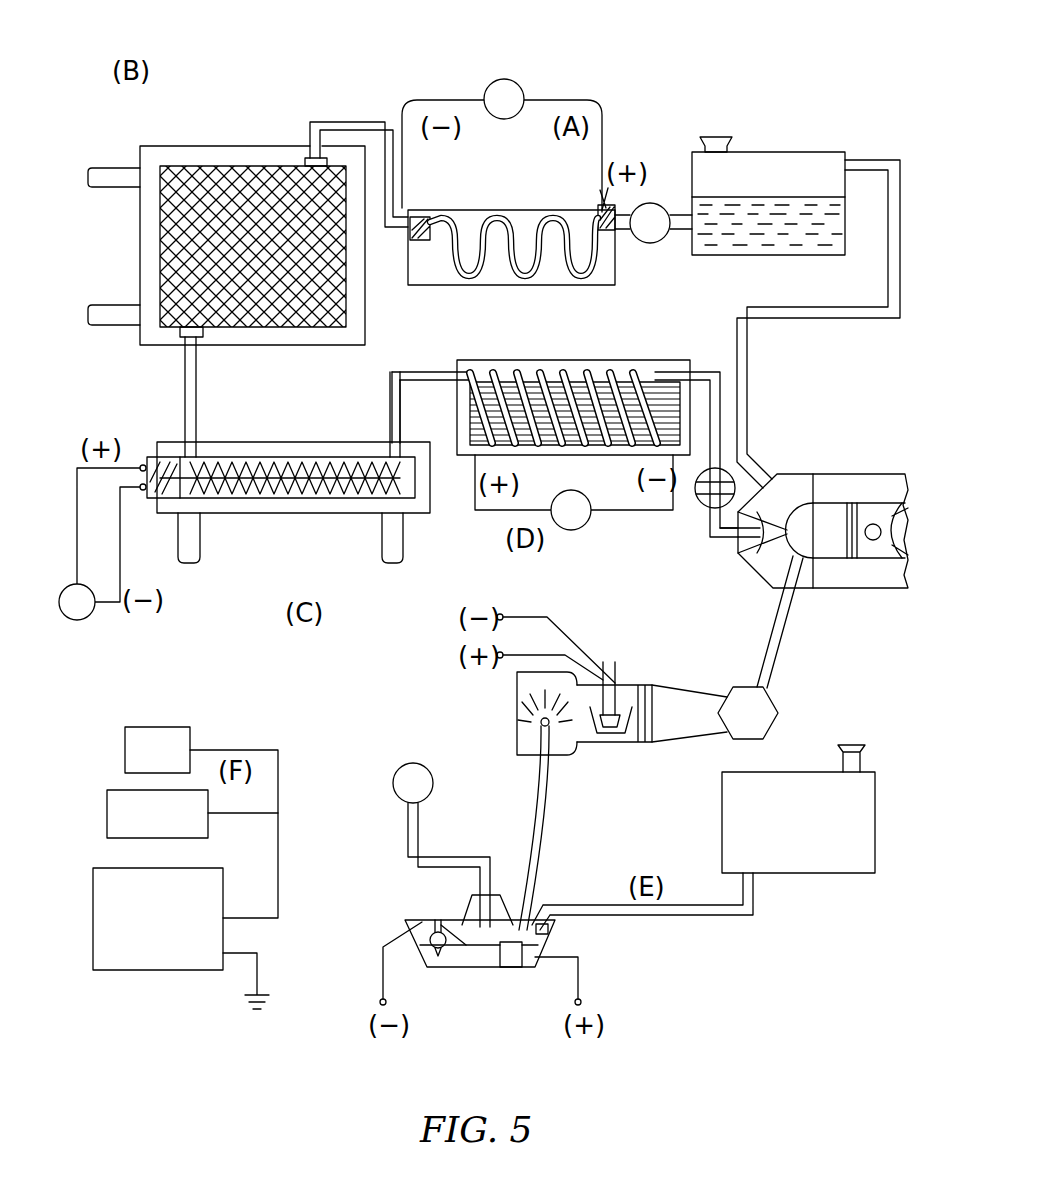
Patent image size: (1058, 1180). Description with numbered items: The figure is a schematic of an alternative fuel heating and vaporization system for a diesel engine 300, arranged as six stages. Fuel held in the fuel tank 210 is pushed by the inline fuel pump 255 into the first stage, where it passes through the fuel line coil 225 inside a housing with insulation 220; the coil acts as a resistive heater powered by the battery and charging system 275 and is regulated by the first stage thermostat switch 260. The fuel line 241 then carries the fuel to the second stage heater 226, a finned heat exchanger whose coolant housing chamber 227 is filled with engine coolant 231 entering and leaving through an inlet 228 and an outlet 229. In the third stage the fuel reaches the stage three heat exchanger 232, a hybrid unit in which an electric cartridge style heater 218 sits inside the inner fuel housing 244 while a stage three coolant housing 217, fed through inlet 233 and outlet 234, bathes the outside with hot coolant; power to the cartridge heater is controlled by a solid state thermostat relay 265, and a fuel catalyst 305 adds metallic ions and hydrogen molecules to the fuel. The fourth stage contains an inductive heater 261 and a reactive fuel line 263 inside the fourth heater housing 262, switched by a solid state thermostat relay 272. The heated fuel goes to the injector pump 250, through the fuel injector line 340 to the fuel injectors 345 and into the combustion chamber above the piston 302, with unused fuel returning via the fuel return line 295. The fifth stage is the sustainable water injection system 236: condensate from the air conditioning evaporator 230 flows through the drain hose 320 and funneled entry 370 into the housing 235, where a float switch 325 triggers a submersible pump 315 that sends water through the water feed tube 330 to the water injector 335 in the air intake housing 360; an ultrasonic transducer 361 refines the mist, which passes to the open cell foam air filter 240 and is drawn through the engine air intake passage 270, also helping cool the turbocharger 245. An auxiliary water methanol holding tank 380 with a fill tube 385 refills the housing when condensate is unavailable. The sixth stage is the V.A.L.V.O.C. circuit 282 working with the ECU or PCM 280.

The fuel tank 210 is at (772, 152).
The stage three coolant housing 217 is at (357, 515).
The electric cartridge style heater 218 is at (397, 476).
The housing with insulation 220 is at (442, 270).
The fuel line coil 225 is at (485, 215).
The second stage heater 226 is at (205, 166).
The coolant housing chamber 227 is at (248, 146).
The inlet 228 is at (100, 168).
The outlet 229 is at (100, 305).
The air conditioning evaporator 230 is at (396, 772).
The engine coolant 231 is at (255, 442).
The stage three heat exchanger 232 is at (254, 540).
The inlet 233 is at (195, 531).
The outlet 234 is at (398, 529).
The housing 235 is at (550, 948).
The sustainable water injection system 236 is at (608, 967).
The open cell foam air filter 240 is at (640, 685).
The fuel line 241 is at (360, 122).
The inner fuel housing 244 is at (330, 496).
The turbocharger 245 is at (782, 697).
The injector pump 250 is at (700, 506).
The inline fuel pump 255 is at (655, 243).
The first stage thermostat switch 260 is at (510, 80).
The inductive heater 261 is at (590, 385).
The fourth heater housing 262 is at (510, 360).
The fuel line 263 is at (645, 385).
The solid state thermostat relay 265 is at (88, 620).
The engine air intake passage 270 is at (800, 620).
The solid state thermostat relay 272 is at (575, 530).
The battery and charging system 275 is at (178, 930).
The ECU or PCM 280 is at (178, 828).
The V.A.L.V.O.C. circuit 282 is at (178, 764).
The fuel return line 295 is at (888, 282).
The diesel engine 300 is at (825, 474).
The piston 302 is at (875, 510).
The fuel catalyst 305 is at (355, 462).
The submersible pump 315 is at (515, 962).
The drain hose 320 is at (472, 857).
The float switch 325 is at (442, 956).
The water feed tube 330 is at (550, 818).
The water injector 335 is at (538, 730).
The fuel injector line 340 is at (718, 545).
The fuel injectors 345 is at (758, 553).
The air intake housing 360 is at (517, 713).
The ultrasonic transducer 361 is at (617, 745).
The funneled entry 370 is at (470, 900).
The auxiliary water methanol holding tank 380 is at (815, 873).
The fill tube 385 is at (862, 758).